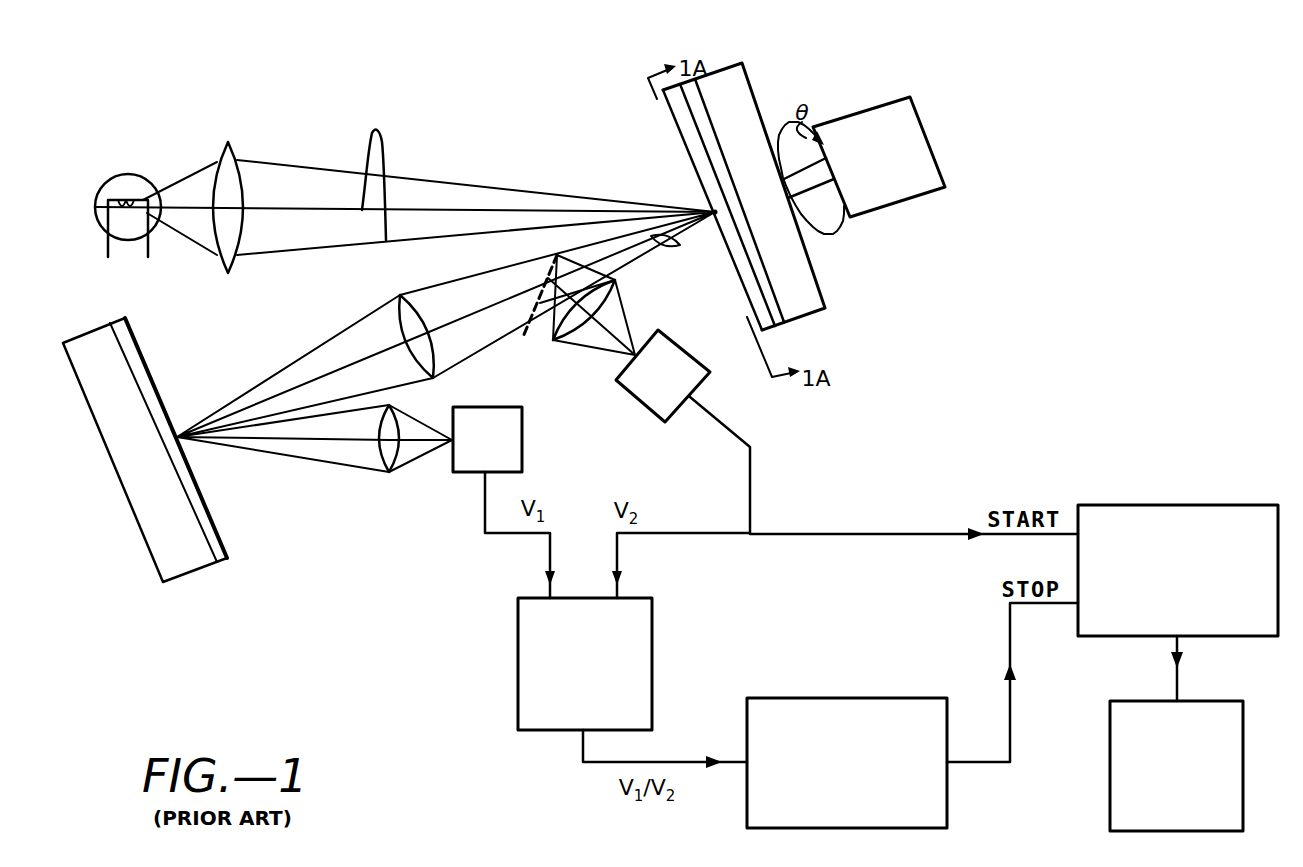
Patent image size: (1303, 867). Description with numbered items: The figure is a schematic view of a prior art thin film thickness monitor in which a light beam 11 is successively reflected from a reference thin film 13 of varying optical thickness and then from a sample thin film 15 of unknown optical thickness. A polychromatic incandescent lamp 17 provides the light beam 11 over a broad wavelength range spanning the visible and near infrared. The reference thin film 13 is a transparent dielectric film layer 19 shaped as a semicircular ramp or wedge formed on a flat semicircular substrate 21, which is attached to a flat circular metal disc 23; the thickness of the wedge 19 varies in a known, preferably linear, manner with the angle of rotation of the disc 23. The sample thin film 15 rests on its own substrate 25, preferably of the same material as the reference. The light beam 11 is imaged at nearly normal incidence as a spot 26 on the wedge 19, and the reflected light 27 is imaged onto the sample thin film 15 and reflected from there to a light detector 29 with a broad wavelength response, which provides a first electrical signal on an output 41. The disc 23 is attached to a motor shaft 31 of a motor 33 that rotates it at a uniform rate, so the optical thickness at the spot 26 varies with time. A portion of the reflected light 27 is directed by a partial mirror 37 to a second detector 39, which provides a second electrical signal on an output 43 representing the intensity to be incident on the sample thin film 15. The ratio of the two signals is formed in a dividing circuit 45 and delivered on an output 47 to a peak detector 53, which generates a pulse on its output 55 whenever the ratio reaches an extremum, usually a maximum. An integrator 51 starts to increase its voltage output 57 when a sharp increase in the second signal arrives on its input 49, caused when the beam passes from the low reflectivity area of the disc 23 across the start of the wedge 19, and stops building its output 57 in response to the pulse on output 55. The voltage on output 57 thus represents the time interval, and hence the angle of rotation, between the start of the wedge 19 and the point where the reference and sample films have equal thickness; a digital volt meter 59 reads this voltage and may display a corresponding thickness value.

The light beam 11 is at (380, 175).
The reference thin film 13 is at (733, 209).
The sample thin film 15 is at (212, 552).
The incandescent lamp 17 is at (110, 187).
The dielectric film layer 19 is at (680, 117).
The semicircular substrate 21 is at (700, 118).
The circular metal disc 23 is at (737, 87).
The substrate 25 is at (148, 510).
The spot 26 is at (715, 211).
The reflected light 27 is at (675, 246).
The light detector 29 is at (513, 440).
The motor shaft 31 is at (823, 228).
The motor 33 is at (910, 187).
The partial mirror 37 is at (523, 337).
The second detector 39 is at (657, 395).
The output 41 is at (512, 537).
The output 43 is at (750, 493).
The dividing circuit 45 is at (518, 665).
The output 47 is at (598, 763).
The input 49 is at (880, 534).
The integrator 51 is at (1166, 505).
The peak detector 53 is at (833, 698).
The output 55 is at (1010, 647).
The voltage output 57 is at (1177, 684).
The digital volt meter 59 is at (1110, 759).